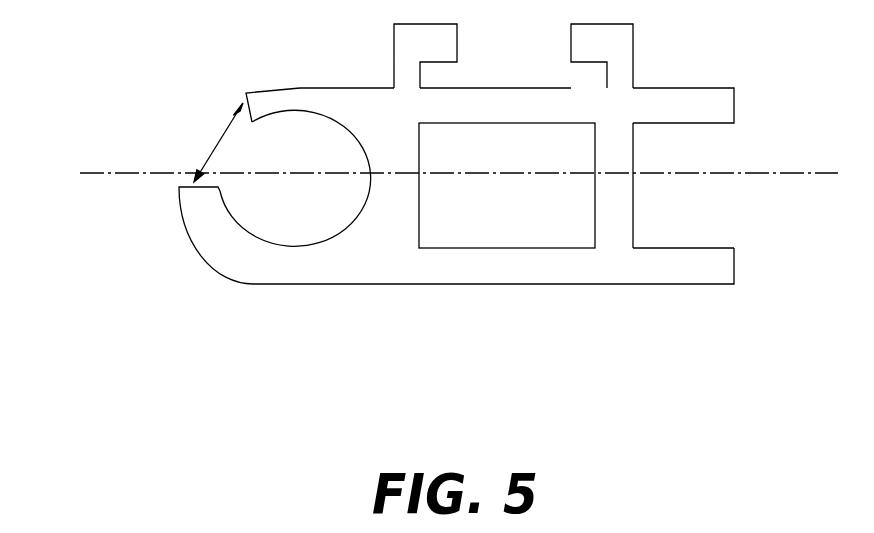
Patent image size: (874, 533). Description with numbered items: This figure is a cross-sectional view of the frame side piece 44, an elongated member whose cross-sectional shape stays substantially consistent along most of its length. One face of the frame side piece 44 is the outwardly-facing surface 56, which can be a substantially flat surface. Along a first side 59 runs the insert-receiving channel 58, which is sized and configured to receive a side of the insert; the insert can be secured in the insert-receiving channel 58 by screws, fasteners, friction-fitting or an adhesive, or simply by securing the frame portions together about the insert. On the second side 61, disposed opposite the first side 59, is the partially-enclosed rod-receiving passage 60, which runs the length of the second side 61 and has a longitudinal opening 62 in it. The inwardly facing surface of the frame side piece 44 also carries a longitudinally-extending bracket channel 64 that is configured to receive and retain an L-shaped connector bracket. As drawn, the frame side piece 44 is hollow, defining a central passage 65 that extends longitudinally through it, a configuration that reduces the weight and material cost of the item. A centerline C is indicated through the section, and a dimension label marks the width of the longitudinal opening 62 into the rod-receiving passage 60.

The frame side piece 44 is at (206, 353).
The outwardly-facing surface 56 is at (458, 285).
The insert-receiving channel 58 is at (633, 164).
The first side 59 is at (734, 102).
The rod-receiving passage 60 is at (320, 157).
The second side 61 is at (300, 98).
The longitudinal opening 62 is at (223, 125).
The bracket channel 64 is at (558, 88).
The central passage 65 is at (580, 235).
The centerline C is at (100, 173).